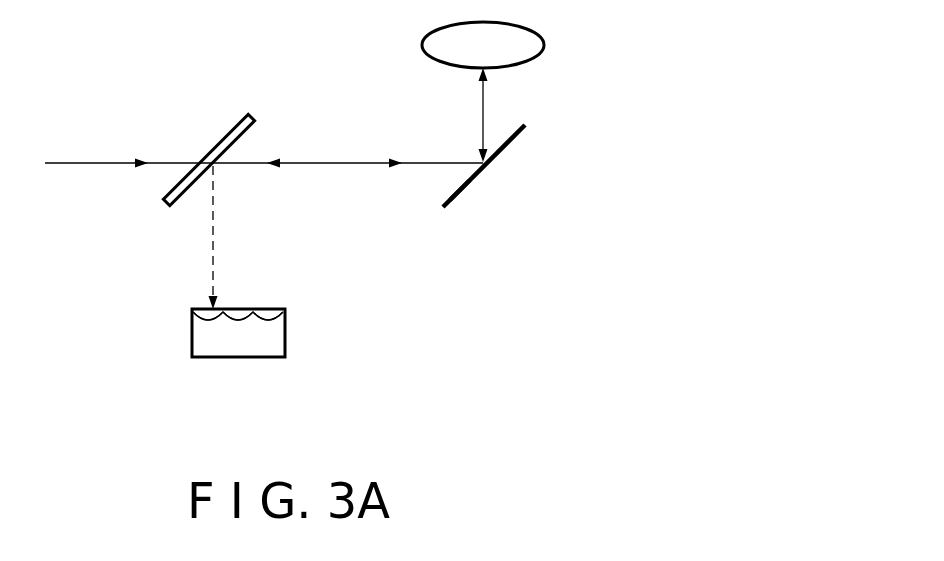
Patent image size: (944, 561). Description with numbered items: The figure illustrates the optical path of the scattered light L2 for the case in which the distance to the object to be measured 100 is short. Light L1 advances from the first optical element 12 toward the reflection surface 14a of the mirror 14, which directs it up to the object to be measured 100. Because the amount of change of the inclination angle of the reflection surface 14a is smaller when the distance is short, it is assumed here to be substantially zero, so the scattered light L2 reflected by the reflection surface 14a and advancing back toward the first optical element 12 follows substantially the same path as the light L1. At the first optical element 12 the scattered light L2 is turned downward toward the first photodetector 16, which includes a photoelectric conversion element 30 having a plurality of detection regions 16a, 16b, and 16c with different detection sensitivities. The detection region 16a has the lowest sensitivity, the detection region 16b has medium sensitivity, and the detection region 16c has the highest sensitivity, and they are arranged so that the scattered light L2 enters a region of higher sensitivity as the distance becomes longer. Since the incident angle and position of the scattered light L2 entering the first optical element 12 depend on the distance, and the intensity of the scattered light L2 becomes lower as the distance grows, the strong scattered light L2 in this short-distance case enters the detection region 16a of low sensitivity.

The first optical element 12 is at (226, 133).
The mirror 14 is at (509, 151).
The reflection surface 14a is at (457, 193).
The first photodetector 16 is at (297, 333).
The photoelectric conversion element 30 is at (285, 332).
The detection region 16a is at (210, 320).
The detection region 16b is at (238, 320).
The detection region 16c is at (267, 320).
The object to be measured 100 is at (542, 32).
The light L1 is at (114, 162).
The scattered light L2 is at (217, 248).